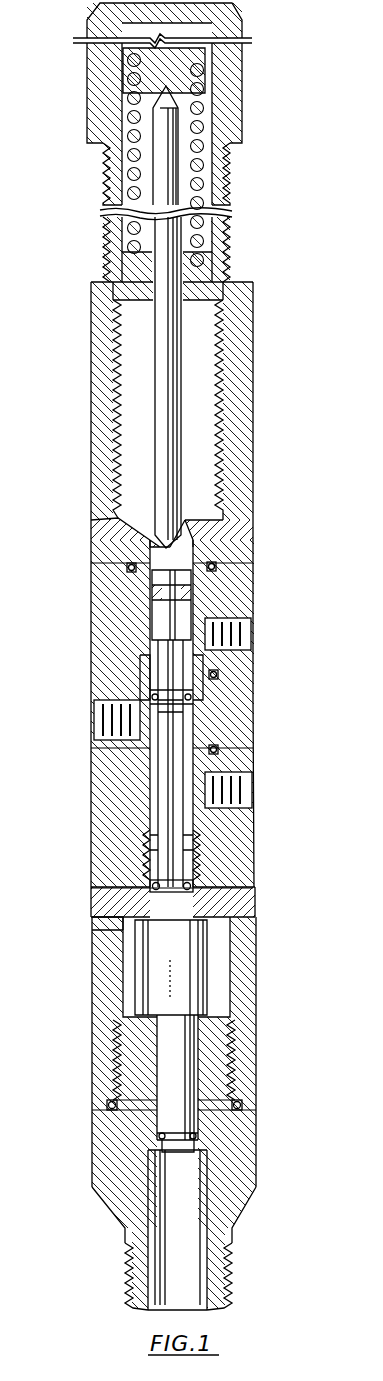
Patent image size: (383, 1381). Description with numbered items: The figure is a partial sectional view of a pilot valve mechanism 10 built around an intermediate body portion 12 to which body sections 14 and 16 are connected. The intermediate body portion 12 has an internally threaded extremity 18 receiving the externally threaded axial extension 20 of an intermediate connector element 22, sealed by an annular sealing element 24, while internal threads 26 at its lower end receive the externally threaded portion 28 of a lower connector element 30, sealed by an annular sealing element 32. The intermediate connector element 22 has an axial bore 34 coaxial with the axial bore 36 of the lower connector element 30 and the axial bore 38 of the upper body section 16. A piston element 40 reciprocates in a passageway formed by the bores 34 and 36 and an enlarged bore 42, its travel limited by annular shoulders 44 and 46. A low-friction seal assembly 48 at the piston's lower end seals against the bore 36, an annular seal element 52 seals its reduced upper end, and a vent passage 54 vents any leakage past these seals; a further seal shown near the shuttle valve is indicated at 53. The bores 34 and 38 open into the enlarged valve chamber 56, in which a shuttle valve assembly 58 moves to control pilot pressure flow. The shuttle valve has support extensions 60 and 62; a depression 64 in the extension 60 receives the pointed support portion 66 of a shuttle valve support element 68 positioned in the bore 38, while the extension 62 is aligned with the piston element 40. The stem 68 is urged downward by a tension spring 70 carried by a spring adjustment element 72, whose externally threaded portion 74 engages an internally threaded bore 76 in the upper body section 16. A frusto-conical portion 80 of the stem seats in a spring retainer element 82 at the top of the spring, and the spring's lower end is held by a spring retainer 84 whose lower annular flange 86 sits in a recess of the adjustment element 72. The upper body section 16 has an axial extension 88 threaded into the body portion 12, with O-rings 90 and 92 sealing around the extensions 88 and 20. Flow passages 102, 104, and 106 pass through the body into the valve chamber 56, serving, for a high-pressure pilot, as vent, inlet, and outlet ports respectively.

The pilot valve mechanism 10 is at (288, 535).
The intermediate body portion 12 is at (112, 770).
The body section 14 is at (93, 962).
The upper valve body section 16 is at (88, 440).
The internally threaded extremity 18 is at (170, 852).
The externally threaded axial extension 20 is at (210, 845).
The intermediate connector element 22 is at (115, 1015).
The annular sealing element 24 is at (92, 900).
The internal threads 26 is at (115, 1052).
The externally threaded portion 28 is at (118, 1080).
The lower connector element 30 is at (110, 1158).
The annular sealing element 32 is at (108, 1104).
The axial bore 34 is at (195, 821).
The axial bore 36 is at (200, 1062).
The axial bore 38 is at (190, 606).
The piston element 40 is at (195, 955).
The enlarged bore 42 is at (220, 975).
The annular shoulder 44 is at (226, 930).
The annular shoulder 46 is at (215, 1012).
The seal assembly 48 is at (160, 1145).
The annular seal element 52 is at (200, 888).
The seal ring 53 is at (214, 571).
The vent passage 54 is at (97, 920).
The valve chamber 56 is at (198, 697).
The shuttle valve assembly 58 is at (148, 690).
The shuttle valve support extension 60 is at (152, 604).
The shuttle valve support extension 62 is at (145, 845).
The depression 64 is at (186, 540).
The pointed support portion 66 is at (172, 512).
The shuttle valve support element 68 is at (170, 440).
The tension spring 70 is at (138, 180).
The spring adjustment element 72 is at (225, 82).
The externally threaded portion 74 is at (229, 190).
The internally threaded bore 76 is at (222, 392).
The frusto-conical portion 80 is at (174, 98).
The spring retainer element 82 is at (173, 72).
The spring retainer 84 is at (205, 255).
The lower annular flange 86 is at (207, 291).
The axial extension 88 is at (206, 590).
The O-ring 90 is at (130, 562).
The O-ring 92 is at (218, 750).
The flow passage 102 is at (240, 803).
The flow passage 104 is at (245, 637).
The flow passage 106 is at (100, 732).